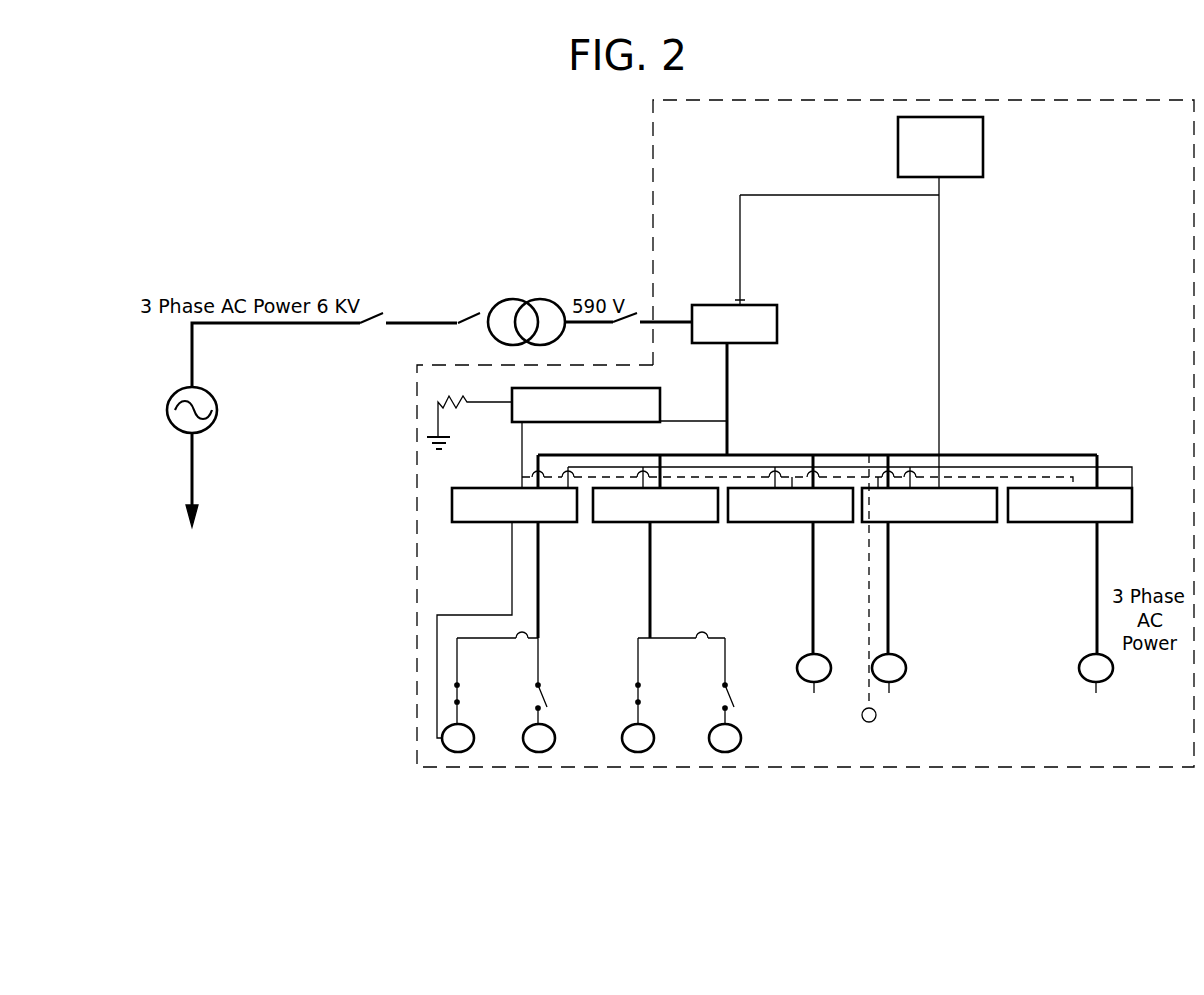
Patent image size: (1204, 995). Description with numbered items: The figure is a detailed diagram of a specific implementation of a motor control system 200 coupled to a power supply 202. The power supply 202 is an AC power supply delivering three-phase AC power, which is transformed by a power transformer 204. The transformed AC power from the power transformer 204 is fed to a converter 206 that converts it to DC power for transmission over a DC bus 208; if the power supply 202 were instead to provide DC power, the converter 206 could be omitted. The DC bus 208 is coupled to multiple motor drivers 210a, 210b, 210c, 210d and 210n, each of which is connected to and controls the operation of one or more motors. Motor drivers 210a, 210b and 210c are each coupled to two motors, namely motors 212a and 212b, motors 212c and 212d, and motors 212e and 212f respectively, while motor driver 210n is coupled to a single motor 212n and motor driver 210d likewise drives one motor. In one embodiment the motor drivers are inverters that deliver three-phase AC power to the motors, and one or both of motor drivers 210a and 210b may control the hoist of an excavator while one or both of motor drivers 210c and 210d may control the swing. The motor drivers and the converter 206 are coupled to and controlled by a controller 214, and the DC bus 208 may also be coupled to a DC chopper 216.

The motor control system 200 is at (832, 100).
The power supply 202 is at (218, 410).
The power transformer 204 is at (486, 311).
The converter 206 is at (778, 323).
The DC bus 208 is at (729, 365).
The motor driver 210a is at (557, 523).
The motor driver 210b is at (675, 523).
The motor driver 210c is at (778, 523).
The motor driver 210d is at (920, 523).
The motor driver 210n is at (1115, 523).
The motor 212a is at (467, 723).
The motor 212b is at (557, 725).
The motor 212c is at (648, 723).
The motor 212d is at (742, 738).
The motor 212e is at (827, 657).
The motor 212f is at (902, 657).
The motor 212n is at (1113, 672).
The controller 214 is at (984, 147).
The DC chopper 216 is at (512, 418).